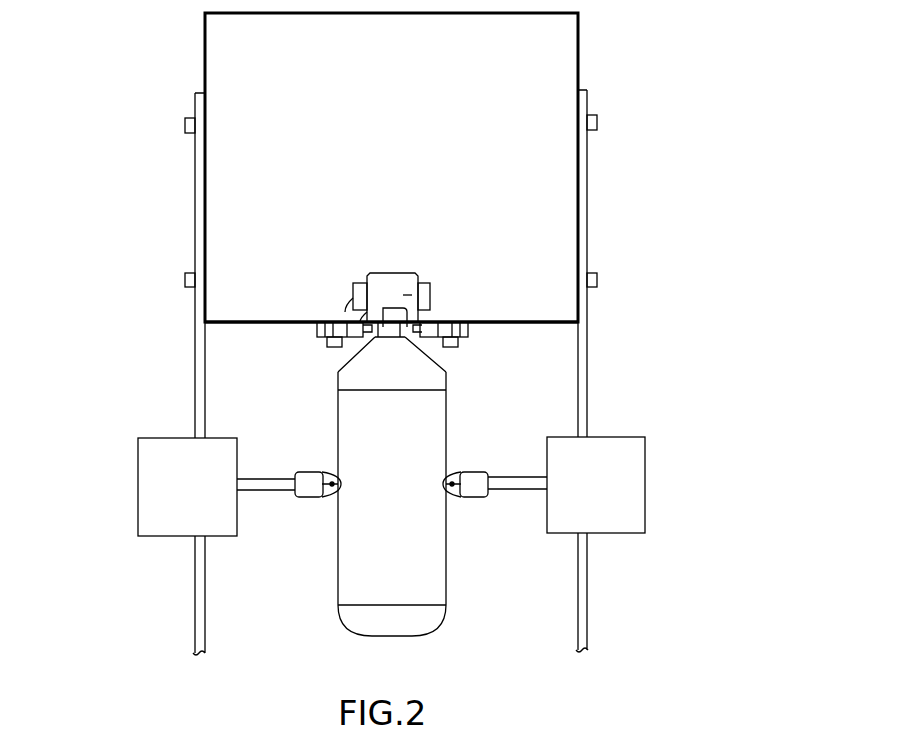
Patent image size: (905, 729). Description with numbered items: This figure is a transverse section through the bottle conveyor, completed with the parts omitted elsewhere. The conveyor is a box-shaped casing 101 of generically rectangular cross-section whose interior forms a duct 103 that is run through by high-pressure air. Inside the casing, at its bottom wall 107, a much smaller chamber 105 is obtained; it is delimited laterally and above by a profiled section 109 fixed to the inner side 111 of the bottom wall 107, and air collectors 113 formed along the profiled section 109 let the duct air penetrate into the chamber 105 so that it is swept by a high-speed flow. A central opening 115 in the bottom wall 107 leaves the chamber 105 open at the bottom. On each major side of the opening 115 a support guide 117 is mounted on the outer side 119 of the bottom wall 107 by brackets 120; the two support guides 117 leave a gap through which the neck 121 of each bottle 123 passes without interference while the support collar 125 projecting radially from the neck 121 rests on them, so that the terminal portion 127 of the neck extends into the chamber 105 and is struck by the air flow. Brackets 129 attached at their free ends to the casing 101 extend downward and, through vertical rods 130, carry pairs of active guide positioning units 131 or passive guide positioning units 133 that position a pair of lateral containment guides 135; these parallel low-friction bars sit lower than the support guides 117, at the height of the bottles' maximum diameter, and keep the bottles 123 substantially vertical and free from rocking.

The box-shaped casing 101 is at (205, 47).
The duct 103 is at (350, 82).
The chamber 105 is at (387, 283).
The bottom wall 107 is at (246, 318).
The profiled section 109 is at (394, 300).
The inner side 111 is at (556, 320).
The air collectors 113 is at (356, 298).
The opening 115 is at (352, 300).
The support guides 117 is at (345, 352).
The outer side 119 is at (538, 323).
The brackets 120 is at (302, 336).
The neck 121 is at (403, 294).
The bottle 123 is at (449, 546).
The support collar 125 is at (393, 338).
The terminal portion 127 is at (385, 313).
The brackets 129 is at (194, 351).
The vertical rods 130 is at (200, 388).
The active guide positioning units 131 is at (136, 511).
The passive guide positioning units 133 is at (648, 510).
The lateral containment guides 135 is at (332, 493).